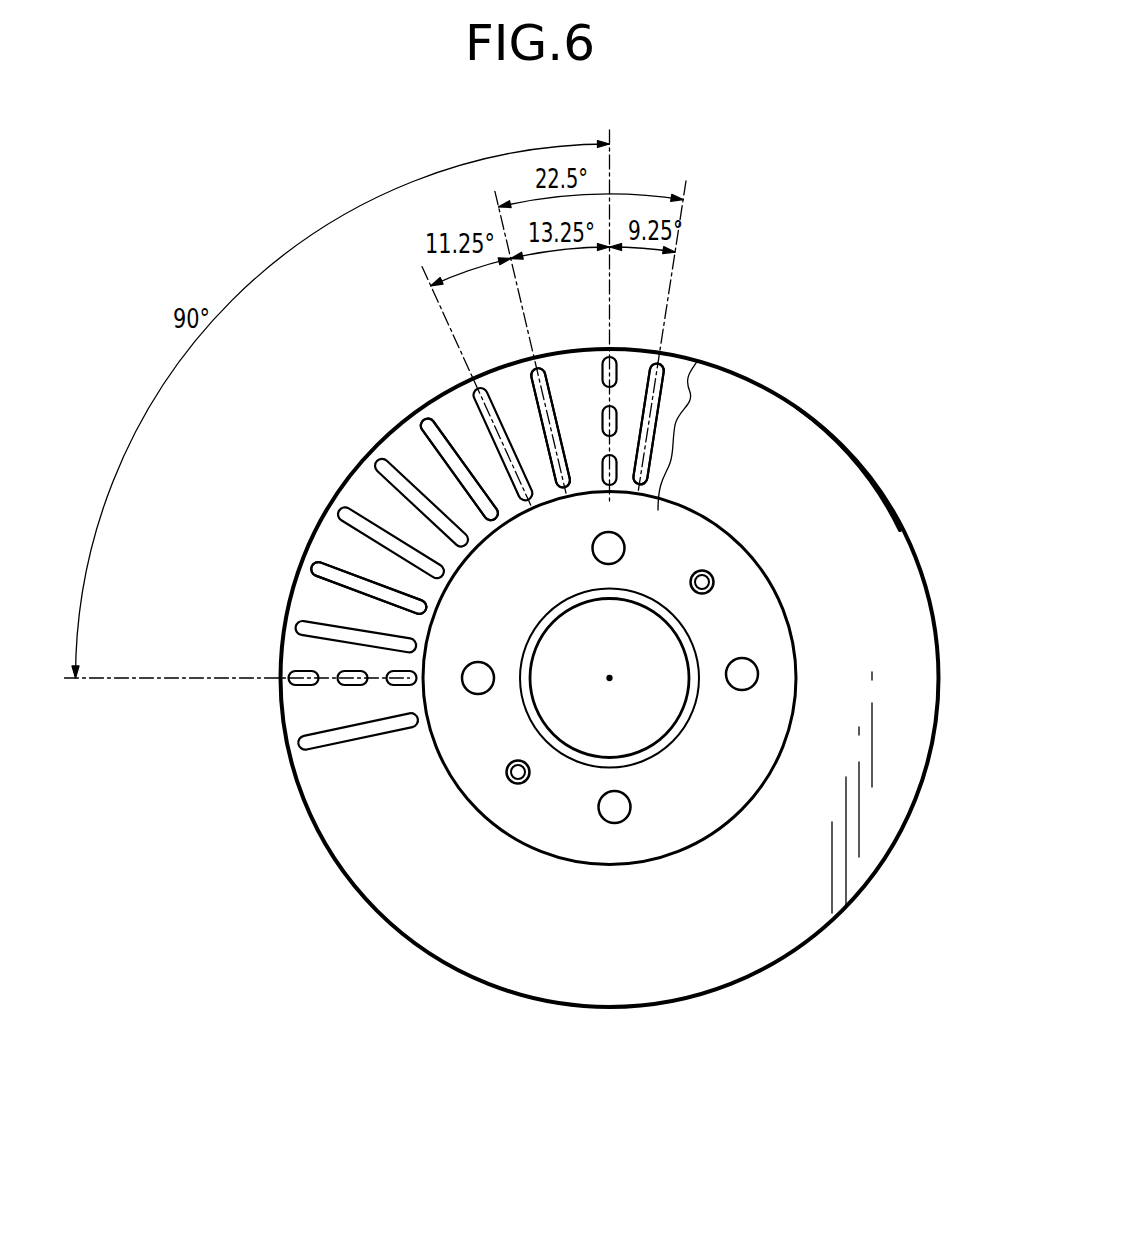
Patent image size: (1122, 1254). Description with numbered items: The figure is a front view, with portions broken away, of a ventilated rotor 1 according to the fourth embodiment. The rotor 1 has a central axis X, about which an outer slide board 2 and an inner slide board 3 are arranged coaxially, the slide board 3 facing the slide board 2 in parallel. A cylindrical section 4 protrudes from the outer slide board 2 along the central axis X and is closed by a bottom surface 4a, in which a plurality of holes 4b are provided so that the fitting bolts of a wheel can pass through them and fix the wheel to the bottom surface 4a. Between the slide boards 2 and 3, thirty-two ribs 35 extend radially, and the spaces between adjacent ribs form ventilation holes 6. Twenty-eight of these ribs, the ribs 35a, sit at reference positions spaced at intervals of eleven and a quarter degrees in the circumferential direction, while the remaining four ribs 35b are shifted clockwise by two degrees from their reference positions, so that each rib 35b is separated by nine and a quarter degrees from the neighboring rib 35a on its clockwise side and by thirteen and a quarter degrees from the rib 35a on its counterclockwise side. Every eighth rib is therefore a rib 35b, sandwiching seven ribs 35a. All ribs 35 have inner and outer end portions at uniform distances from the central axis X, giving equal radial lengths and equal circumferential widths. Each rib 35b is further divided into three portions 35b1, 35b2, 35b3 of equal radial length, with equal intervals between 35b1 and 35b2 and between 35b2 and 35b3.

The ventilated rotor 1 is at (918, 411).
The slide board 2 is at (682, 378).
The slide board 3 is at (798, 408).
The cylindrical section 4 is at (538, 752).
The bottom surface 4a is at (625, 772).
The holes 4b is at (626, 548).
The ventilation holes 6 is at (468, 430).
The ribs 35 is at (433, 440).
The ribs in reference providing positions 35a is at (662, 362).
The ribs shifted from reference providing positions 35b is at (610, 300).
The first portion of rib 35b 35b1 is at (604, 367).
The second portion of rib 35b 35b2 is at (604, 415).
The third portion of rib 35b 35b3 is at (604, 470).
The central axis X is at (617, 678).